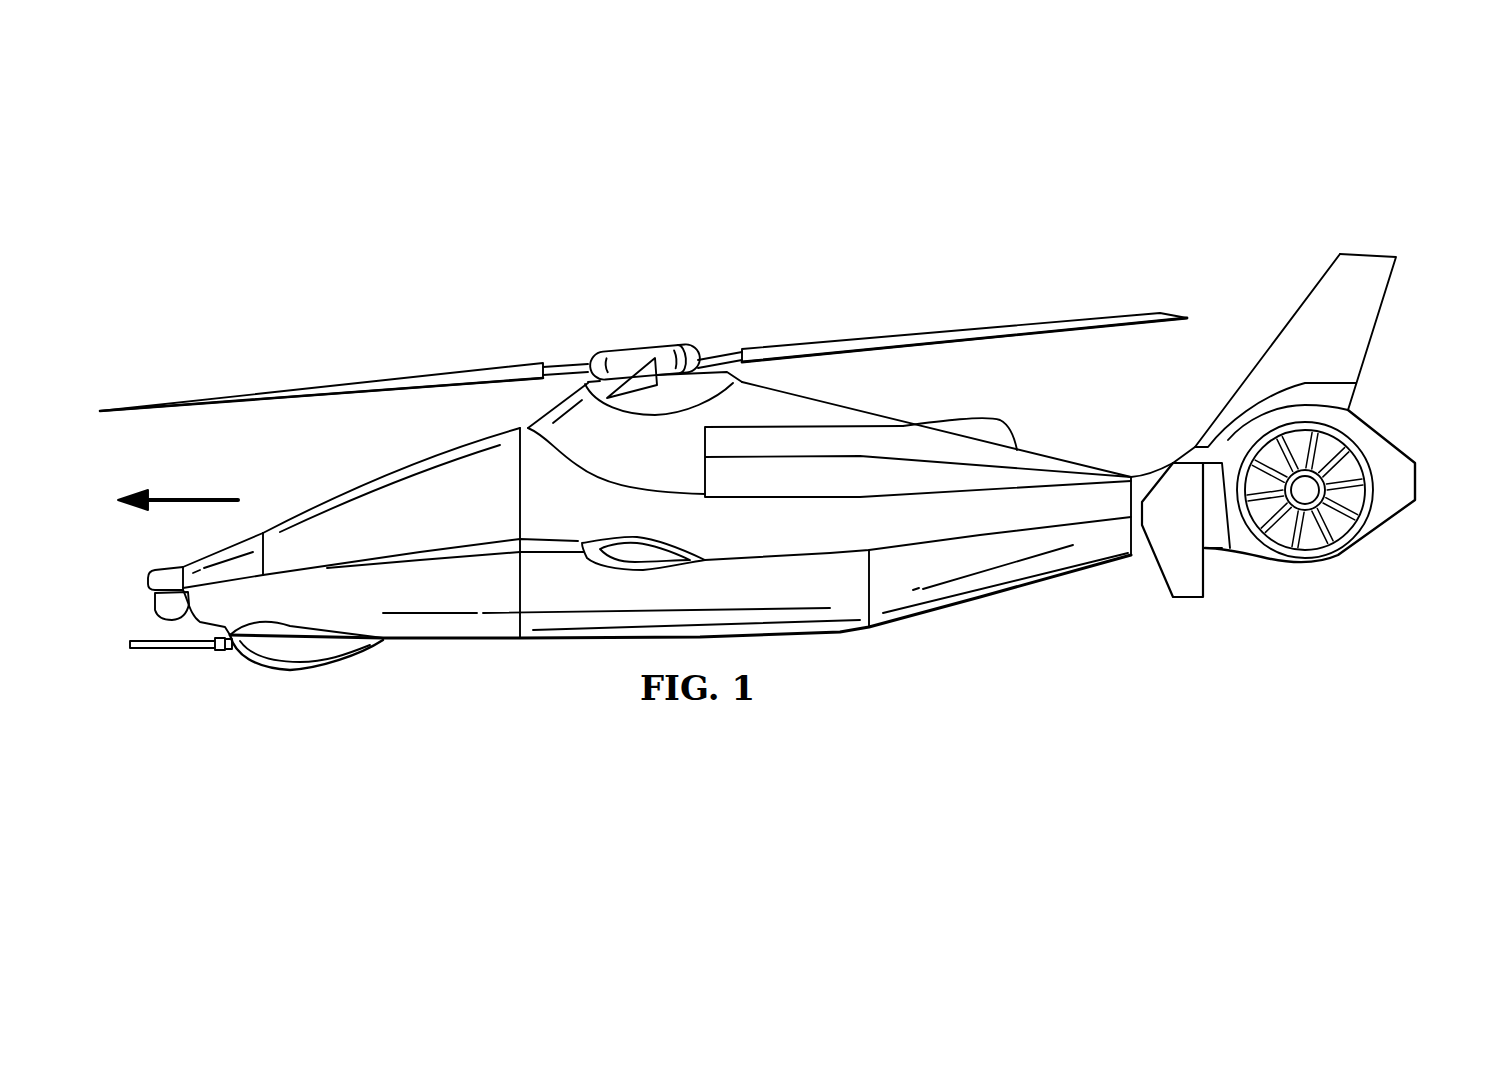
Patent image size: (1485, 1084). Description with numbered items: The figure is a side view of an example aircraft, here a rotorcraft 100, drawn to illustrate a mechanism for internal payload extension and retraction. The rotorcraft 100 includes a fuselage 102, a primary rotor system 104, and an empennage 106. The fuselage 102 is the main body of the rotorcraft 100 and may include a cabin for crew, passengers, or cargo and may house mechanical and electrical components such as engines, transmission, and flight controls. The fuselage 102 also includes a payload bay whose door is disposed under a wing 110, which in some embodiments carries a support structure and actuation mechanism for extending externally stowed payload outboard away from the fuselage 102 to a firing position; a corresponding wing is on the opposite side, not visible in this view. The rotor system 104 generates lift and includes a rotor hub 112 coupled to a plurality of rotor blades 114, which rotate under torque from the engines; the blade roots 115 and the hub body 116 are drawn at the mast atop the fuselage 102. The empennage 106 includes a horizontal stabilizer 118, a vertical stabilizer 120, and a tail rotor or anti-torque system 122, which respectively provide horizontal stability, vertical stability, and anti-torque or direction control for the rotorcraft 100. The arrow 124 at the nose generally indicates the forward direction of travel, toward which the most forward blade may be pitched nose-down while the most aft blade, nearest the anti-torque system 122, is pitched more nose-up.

The rotorcraft 100 is at (297, 243).
The fuselage 102 is at (847, 520).
The primary rotor system 104 is at (670, 258).
The empennage 106 is at (1402, 373).
The wing 110 is at (668, 537).
The rotor hub 112 is at (658, 343).
The rotor blades 114 is at (300, 388).
The blade roots 115 is at (565, 362).
The rotor hub 116 is at (628, 343).
The horizontal stabilizer 118 is at (1190, 600).
The vertical stabilizer 120 is at (1390, 278).
The tail rotor or anti-torque system 122 is at (1335, 540).
The arrow 124 is at (195, 495).